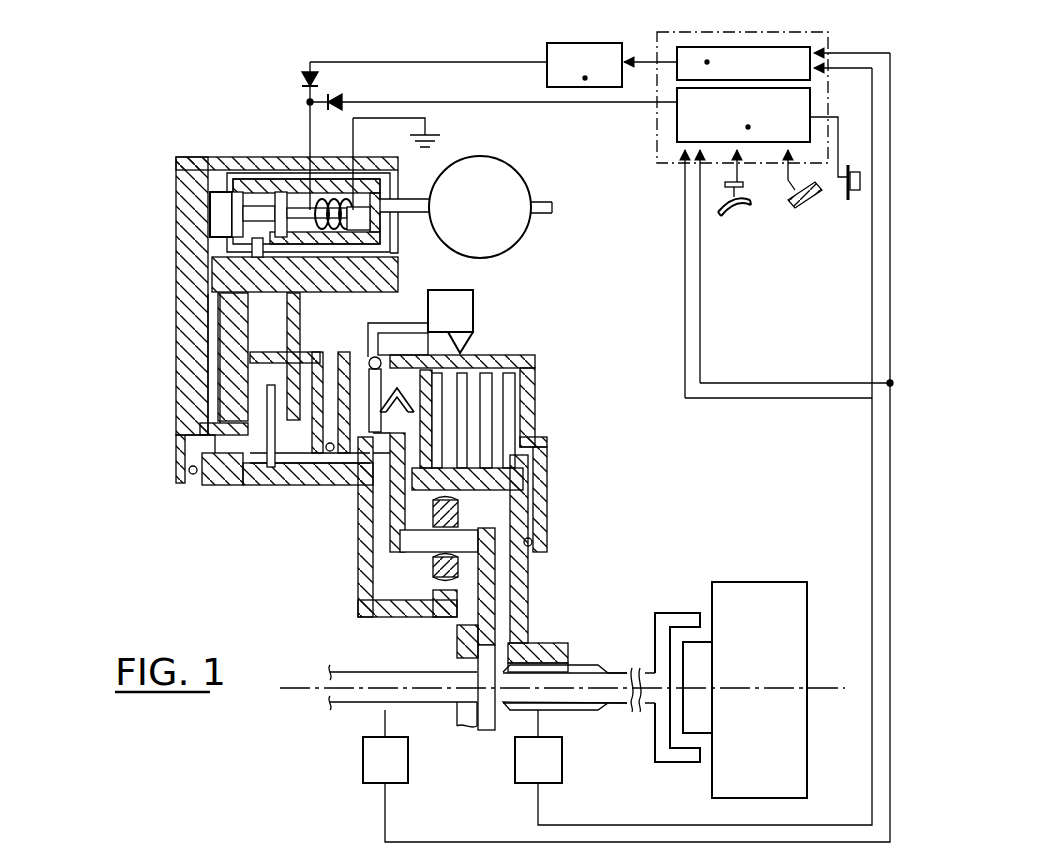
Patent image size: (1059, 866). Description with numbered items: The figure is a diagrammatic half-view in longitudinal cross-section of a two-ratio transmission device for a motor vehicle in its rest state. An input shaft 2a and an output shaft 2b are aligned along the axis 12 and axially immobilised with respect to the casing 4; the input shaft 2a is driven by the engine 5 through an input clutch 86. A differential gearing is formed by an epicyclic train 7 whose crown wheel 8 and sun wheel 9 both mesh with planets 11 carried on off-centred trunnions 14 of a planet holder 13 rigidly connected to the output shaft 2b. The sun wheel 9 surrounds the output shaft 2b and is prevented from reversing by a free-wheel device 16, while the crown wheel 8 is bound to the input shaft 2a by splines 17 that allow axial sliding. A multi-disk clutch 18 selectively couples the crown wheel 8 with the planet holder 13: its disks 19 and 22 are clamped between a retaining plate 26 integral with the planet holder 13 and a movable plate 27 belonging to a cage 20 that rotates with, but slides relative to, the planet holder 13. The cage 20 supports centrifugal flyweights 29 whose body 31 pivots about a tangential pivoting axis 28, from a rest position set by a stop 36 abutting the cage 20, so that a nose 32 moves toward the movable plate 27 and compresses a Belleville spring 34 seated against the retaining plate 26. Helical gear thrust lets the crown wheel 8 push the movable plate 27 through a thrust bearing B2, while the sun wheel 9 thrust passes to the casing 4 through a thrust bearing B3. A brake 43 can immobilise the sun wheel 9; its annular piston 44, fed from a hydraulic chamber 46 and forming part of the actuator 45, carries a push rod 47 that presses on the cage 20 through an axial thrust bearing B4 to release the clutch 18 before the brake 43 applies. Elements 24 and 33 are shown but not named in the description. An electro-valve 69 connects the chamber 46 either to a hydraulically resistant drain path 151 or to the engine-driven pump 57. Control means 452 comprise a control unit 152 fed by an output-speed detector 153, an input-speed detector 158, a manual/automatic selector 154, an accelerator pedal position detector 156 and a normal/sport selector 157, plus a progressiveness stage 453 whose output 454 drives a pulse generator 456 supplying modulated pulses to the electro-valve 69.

The input shaft 2a is at (622, 708).
The output shaft 2b is at (366, 672).
The casing 4 is at (246, 302).
The engine 5 is at (745, 582).
The epicyclic train 7 is at (398, 566).
The crown wheel 8 is at (392, 510).
The sun wheel 9 is at (462, 588).
The planets 11 is at (460, 566).
The axis 12 is at (830, 688).
The planet holder 13 is at (497, 615).
The off-centred trunnions 14 is at (426, 545).
The free-wheel device 16 is at (230, 470).
The splines 17 is at (555, 650).
The multi-disk clutch 18 is at (519, 412).
The disks 19 is at (487, 405).
The cage 20 is at (507, 352).
The disks 22 is at (503, 413).
The inner plate carrier 24 is at (428, 356).
The retaining plate 26 is at (540, 352).
The movable plate 27 is at (548, 364).
The tangential pivoting axis 28 is at (372, 356).
The centrifugal flyweights 29 is at (458, 286).
The body 31 is at (477, 297).
The nose 32 is at (345, 380).
The actuating lever 33 is at (380, 322).
The Belleville spring 34 is at (399, 414).
The stop 36 is at (473, 340).
The brake 43 is at (271, 470).
The piston 44 is at (214, 337).
The actuator 45 is at (196, 372).
The hydraulic chamber 46 is at (216, 308).
The push rod 47 is at (287, 355).
The pump 57 is at (530, 188).
The electro-valve 69 is at (200, 198).
The input clutch 86 is at (677, 610).
The drain path 151 is at (410, 258).
The control unit 152 is at (743, 115).
The detector of output shaft speed 153 is at (363, 764).
The manual/automatic selector 154 is at (736, 218).
The accelerator pedal position detector 156 is at (808, 215).
The normal/sport selector 157 is at (847, 207).
The detector of input shaft speed 158 is at (563, 765).
The control means 452 is at (650, 120).
The progressiveness stage 453 is at (743, 63).
The output 454 is at (718, 81).
The pulse generator 456 is at (612, 65).
The thrust bearing B2 is at (550, 512).
The thrust bearing B3 is at (193, 476).
The axial thrust bearing B4 is at (312, 498).